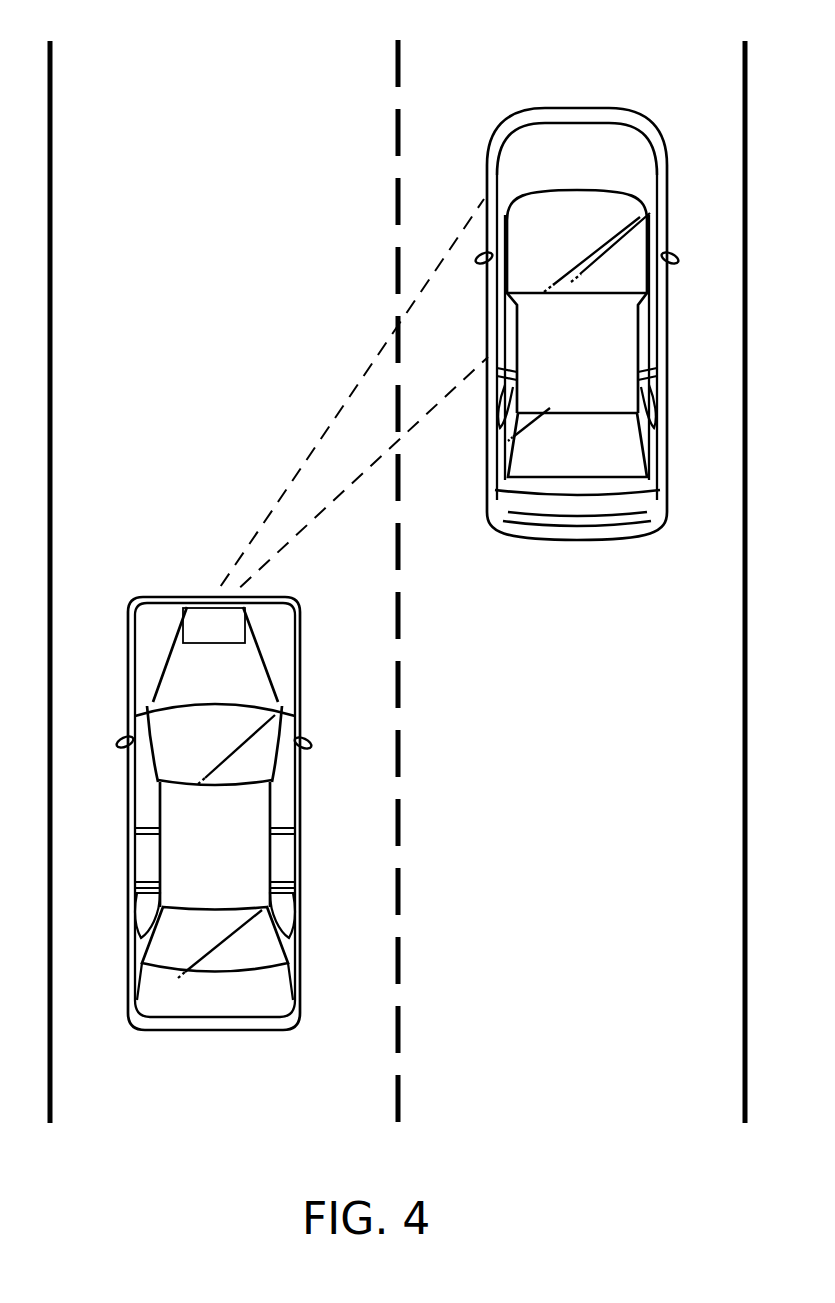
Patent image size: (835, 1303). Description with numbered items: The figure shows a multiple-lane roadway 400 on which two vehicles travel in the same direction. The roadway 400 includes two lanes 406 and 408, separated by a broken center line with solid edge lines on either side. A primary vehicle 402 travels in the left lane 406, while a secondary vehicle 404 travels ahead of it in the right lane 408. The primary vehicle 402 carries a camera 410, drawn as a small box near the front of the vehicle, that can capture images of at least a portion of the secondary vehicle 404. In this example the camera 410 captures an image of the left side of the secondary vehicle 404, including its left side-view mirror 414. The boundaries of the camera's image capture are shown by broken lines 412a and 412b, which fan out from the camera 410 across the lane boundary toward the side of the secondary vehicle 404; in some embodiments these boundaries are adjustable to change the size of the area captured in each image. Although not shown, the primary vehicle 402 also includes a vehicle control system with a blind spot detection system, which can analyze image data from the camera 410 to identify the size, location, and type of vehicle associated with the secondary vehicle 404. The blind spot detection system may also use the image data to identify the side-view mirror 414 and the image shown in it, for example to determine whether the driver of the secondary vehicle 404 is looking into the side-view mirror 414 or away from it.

The multiple-lane roadway 400 is at (190, 44).
The primary vehicle 402 is at (214, 813).
The secondary vehicle 404 is at (505, 324).
The lane 406 is at (244, 1112).
The lane 408 is at (592, 1112).
The camera 410 is at (214, 625).
The broken line 412a is at (318, 444).
The broken line 412b is at (292, 540).
The left side-view mirror 414 is at (485, 257).